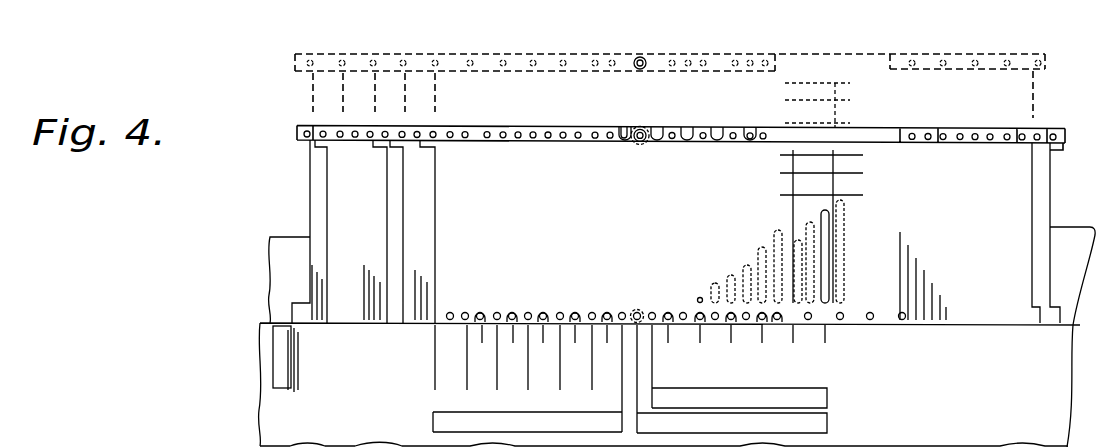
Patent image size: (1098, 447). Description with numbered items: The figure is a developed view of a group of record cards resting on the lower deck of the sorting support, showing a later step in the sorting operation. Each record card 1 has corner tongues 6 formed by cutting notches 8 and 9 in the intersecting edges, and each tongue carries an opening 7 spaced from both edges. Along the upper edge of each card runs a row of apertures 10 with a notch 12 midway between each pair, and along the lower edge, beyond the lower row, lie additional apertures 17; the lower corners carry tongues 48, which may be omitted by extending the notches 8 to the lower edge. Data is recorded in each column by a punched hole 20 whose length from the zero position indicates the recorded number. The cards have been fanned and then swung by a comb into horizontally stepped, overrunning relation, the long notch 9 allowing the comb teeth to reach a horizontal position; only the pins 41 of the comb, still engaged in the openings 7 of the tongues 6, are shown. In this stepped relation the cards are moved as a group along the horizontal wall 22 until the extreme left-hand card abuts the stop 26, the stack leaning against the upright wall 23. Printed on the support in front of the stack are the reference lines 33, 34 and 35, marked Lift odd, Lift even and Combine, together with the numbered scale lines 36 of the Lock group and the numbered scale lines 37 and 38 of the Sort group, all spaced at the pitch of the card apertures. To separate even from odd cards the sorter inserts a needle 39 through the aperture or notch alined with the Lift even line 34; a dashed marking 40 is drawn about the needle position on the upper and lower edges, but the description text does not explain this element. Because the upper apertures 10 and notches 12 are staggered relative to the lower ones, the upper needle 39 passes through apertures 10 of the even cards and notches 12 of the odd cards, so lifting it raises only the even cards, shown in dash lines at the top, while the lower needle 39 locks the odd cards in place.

The record card 1 is at (1040, 253).
The tongue 6 is at (297, 67).
The opening 7 is at (300, 57).
The notch 8 is at (327, 187).
The notch 9 is at (522, 128).
The apertures 10 is at (750, 70).
The notch 12 is at (640, 66).
The additional apertures 17 is at (902, 313).
The hole 20 is at (762, 246).
The horizontal wall 22 is at (258, 426).
The upright wall 23 is at (270, 292).
The stop 26 is at (290, 342).
The reference line 33 is at (622, 392).
The reference line 34 is at (637, 392).
The reference line 35 is at (652, 379).
The scale line 36 is at (704, 315).
The scale line 37 is at (541, 315).
The scale line 38 is at (482, 315).
The needle 39 is at (648, 68).
The pivot ring 40 is at (639, 144).
The pin 41 is at (958, 140).
The tongue 48 is at (322, 303).